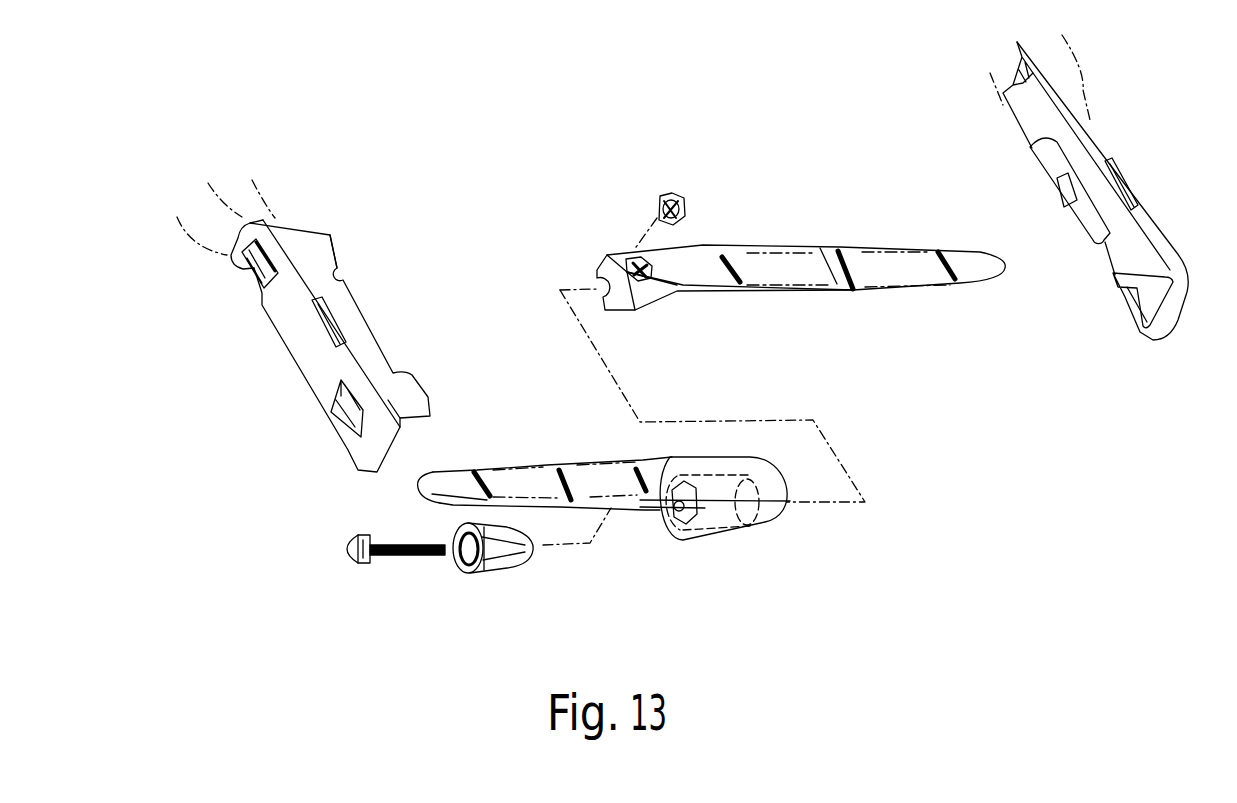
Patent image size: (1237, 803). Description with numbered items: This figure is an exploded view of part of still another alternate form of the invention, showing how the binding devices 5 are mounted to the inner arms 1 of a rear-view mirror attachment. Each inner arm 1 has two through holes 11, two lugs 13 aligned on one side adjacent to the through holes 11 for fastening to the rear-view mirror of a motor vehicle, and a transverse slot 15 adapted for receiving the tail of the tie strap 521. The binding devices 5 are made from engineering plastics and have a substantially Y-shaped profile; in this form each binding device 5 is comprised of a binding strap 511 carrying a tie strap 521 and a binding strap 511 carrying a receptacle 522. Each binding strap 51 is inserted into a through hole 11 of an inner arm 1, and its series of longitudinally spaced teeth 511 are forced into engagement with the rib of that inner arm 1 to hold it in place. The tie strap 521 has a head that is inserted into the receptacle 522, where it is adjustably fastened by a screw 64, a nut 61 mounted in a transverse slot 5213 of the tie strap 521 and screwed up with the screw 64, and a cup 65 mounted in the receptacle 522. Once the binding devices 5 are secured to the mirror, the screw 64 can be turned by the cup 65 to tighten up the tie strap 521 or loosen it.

The inner arm 1 is at (292, 267).
The through hole 11 is at (250, 270).
The lug 13 is at (326, 253).
The transverse slot 15 is at (338, 327).
The binding device 5 is at (794, 250).
The binding strap 51 is at (721, 373).
The teeth 511 is at (943, 256).
The tie strap 521 is at (636, 303).
The transverse slot 5213 is at (648, 266).
The receptacle 522 is at (715, 537).
The nut 61 is at (684, 199).
The screw 64 is at (392, 557).
The cup 65 is at (507, 567).